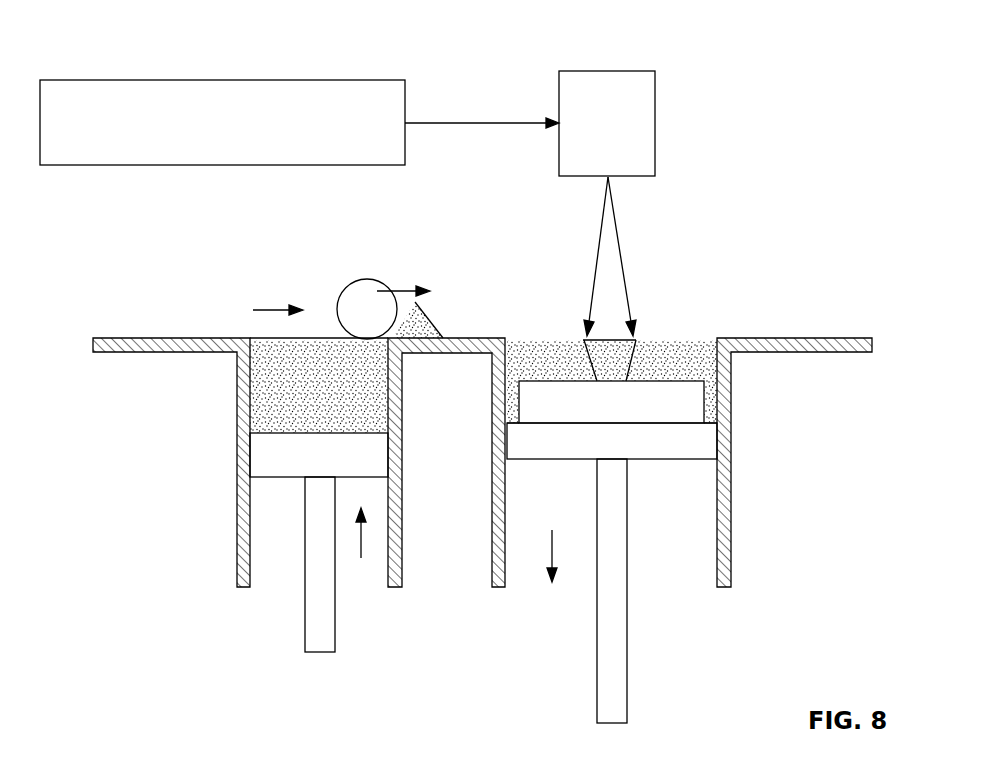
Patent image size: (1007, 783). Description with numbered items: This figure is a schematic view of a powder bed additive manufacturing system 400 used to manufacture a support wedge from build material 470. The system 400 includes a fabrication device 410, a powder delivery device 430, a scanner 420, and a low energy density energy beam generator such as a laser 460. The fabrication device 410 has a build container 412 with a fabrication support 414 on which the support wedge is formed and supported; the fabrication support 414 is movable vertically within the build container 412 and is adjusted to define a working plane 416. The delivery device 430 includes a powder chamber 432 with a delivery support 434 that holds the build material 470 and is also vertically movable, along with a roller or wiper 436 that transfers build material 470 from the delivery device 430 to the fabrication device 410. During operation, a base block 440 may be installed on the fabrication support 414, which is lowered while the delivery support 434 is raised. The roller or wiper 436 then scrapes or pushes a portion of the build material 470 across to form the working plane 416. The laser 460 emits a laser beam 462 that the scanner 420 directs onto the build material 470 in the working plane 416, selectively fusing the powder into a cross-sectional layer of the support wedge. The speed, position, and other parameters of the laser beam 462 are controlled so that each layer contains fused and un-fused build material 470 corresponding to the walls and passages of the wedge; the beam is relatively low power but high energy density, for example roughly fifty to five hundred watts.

The system 400 is at (92, 28).
The fabrication device 410 is at (774, 470).
The build container 412 is at (728, 370).
The fabrication support 414 is at (655, 460).
The working plane 416 is at (677, 338).
The scanner 420 is at (607, 71).
The powder delivery device 430 is at (100, 444).
The powder chamber 432 is at (237, 400).
The delivery support 434 is at (265, 452).
The roller or wiper 436 is at (367, 279).
The base block 440 is at (569, 408).
The laser 460 is at (112, 79).
The laser beam 462 is at (505, 123).
The build material 470 is at (263, 368).